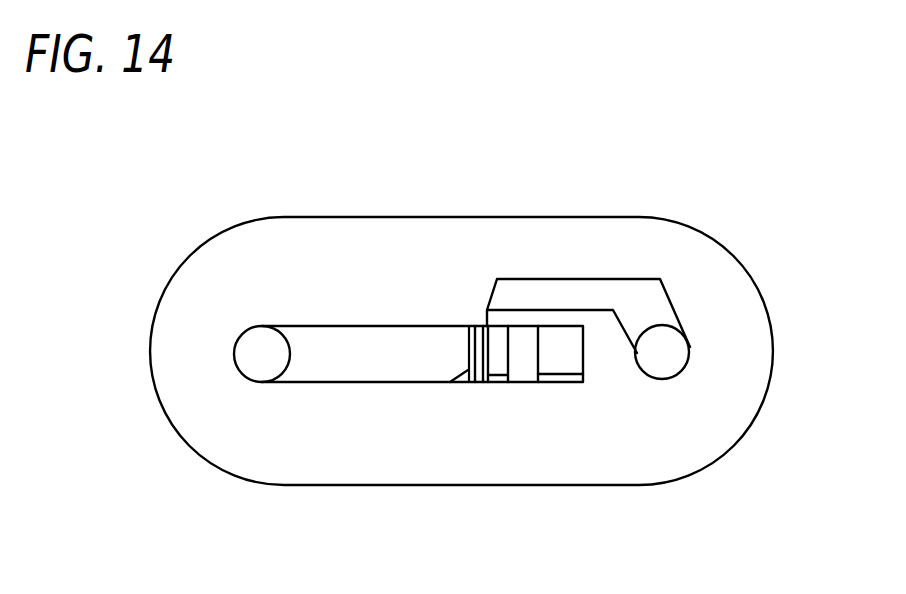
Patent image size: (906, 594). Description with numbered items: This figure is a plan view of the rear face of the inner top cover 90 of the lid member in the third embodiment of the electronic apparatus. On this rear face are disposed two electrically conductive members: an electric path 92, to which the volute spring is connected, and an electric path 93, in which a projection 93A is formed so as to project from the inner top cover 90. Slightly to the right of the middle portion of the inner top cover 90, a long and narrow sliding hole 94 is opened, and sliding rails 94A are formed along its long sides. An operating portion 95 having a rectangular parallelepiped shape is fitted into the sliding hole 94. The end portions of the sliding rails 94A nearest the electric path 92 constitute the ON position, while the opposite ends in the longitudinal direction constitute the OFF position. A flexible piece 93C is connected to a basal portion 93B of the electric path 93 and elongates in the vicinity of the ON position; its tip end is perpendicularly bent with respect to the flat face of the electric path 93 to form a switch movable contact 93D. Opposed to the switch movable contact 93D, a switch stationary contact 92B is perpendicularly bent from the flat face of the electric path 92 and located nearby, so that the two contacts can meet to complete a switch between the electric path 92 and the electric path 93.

The inner top cover 90 is at (735, 410).
The electric path 92 is at (334, 327).
The switch stationary contact 92B is at (447, 377).
The electric path 93 is at (657, 302).
The projection 93A is at (677, 347).
The basal portion 93B is at (487, 312).
The flexible piece 93C is at (482, 325).
The switch movable contact 93D is at (483, 383).
The sliding hole 94 is at (500, 376).
The operating portion 95 is at (520, 376).
The sliding rails 94A is at (563, 383).